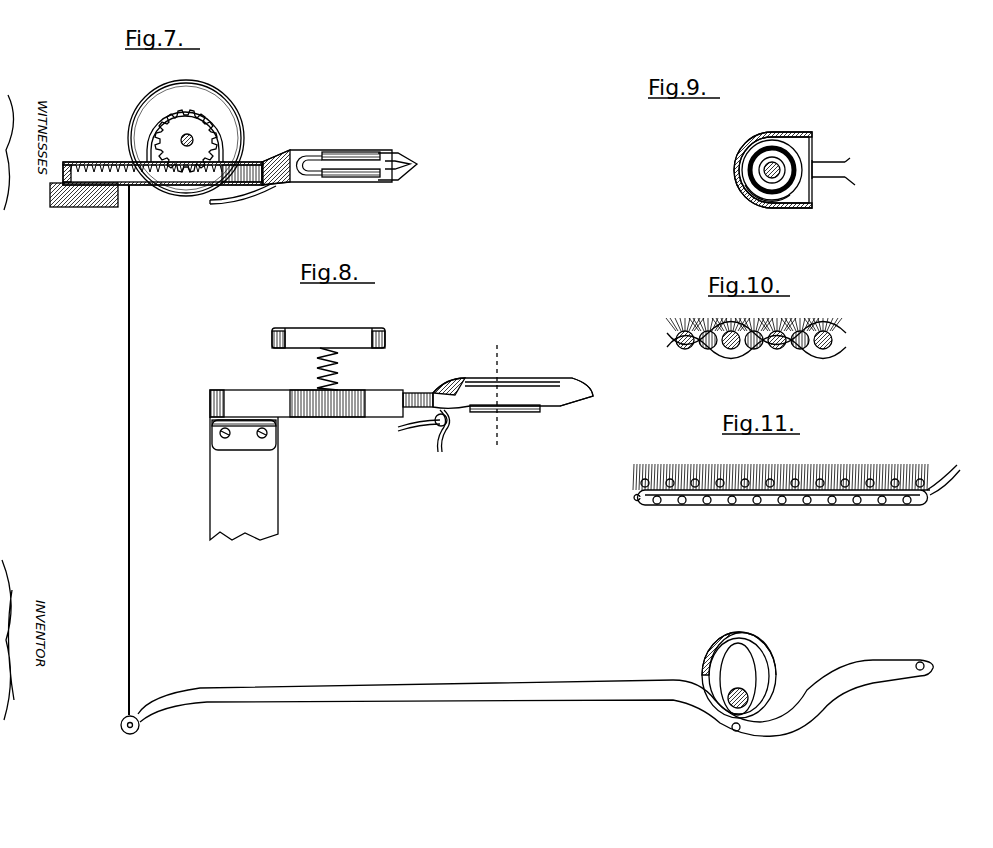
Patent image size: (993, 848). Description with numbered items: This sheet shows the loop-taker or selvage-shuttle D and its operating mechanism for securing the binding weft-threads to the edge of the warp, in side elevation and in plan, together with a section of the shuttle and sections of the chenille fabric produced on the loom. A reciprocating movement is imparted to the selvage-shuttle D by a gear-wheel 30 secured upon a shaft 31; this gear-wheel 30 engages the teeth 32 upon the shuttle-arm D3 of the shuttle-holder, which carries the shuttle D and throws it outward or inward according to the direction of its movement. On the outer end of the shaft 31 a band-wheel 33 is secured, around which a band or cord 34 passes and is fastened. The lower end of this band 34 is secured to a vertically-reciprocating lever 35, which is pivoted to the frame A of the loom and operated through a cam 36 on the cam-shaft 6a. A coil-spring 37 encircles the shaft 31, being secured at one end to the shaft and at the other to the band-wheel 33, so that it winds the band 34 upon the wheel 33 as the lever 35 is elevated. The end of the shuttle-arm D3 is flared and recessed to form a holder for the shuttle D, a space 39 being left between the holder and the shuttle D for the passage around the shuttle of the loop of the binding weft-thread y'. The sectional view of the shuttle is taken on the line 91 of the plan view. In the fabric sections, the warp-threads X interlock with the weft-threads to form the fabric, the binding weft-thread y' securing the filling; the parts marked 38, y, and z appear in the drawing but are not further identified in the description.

In FIG. 7, the gear-wheel 30 is at (207, 127).
In FIG. 7, the shaft 31 is at (190, 136).
In FIG. 7, the teeth 32 is at (163, 148).
In FIG. 7, the band-wheel 33 is at (182, 92).
In FIG. 8, the band-wheel 33 is at (385, 331).
In FIG. 7, the band or cord 34 is at (170, 138).
In FIG. 8, the band or cord 34 is at (387, 341).
In FIG. 7, the vertically-reciprocating lever 35 is at (293, 690).
In FIG. 7, the cam 36 is at (770, 657).
In FIG. 8, the coil-spring 37 is at (339, 366).
In FIG. 7, the blade 38 is at (412, 164).
In FIG. 8, the blade 38 is at (579, 388).
In FIG. 9, the blade 38 is at (815, 163).
In FIG. 7, the space 39 is at (352, 153).
In FIG. 9, the space 39 is at (800, 134).
In FIG. 8, the section line 91 is at (495, 397).
In FIG. 7, the cam-shaft 6a is at (733, 707).
In FIG. 8, the frame A is at (270, 485).
In FIG. 7, the selvage-shuttle D is at (327, 153).
In FIG. 8, the selvage-shuttle D is at (498, 382).
In FIG. 9, the selvage-shuttle D is at (735, 150).
In FIG. 7, the shuttle-arm D3 is at (150, 185).
In FIG. 10, the warp-threads X is at (835, 346).
In FIG. 11, the warp-threads X is at (719, 487).
In FIG. 10, the wire y is at (754, 352).
In FIG. 8, the binding weft-thread y' is at (453, 431).
In FIG. 9, the binding weft-thread y' is at (851, 176).
In FIG. 10, the binding weft-thread y' is at (756, 347).
In FIG. 11, the binding weft-thread y' is at (814, 495).
In FIG. 7, the strip z is at (250, 202).
In FIG. 8, the strip z is at (419, 436).
In FIG. 9, the strip z is at (745, 190).
In FIG. 11, the strip z is at (643, 505).